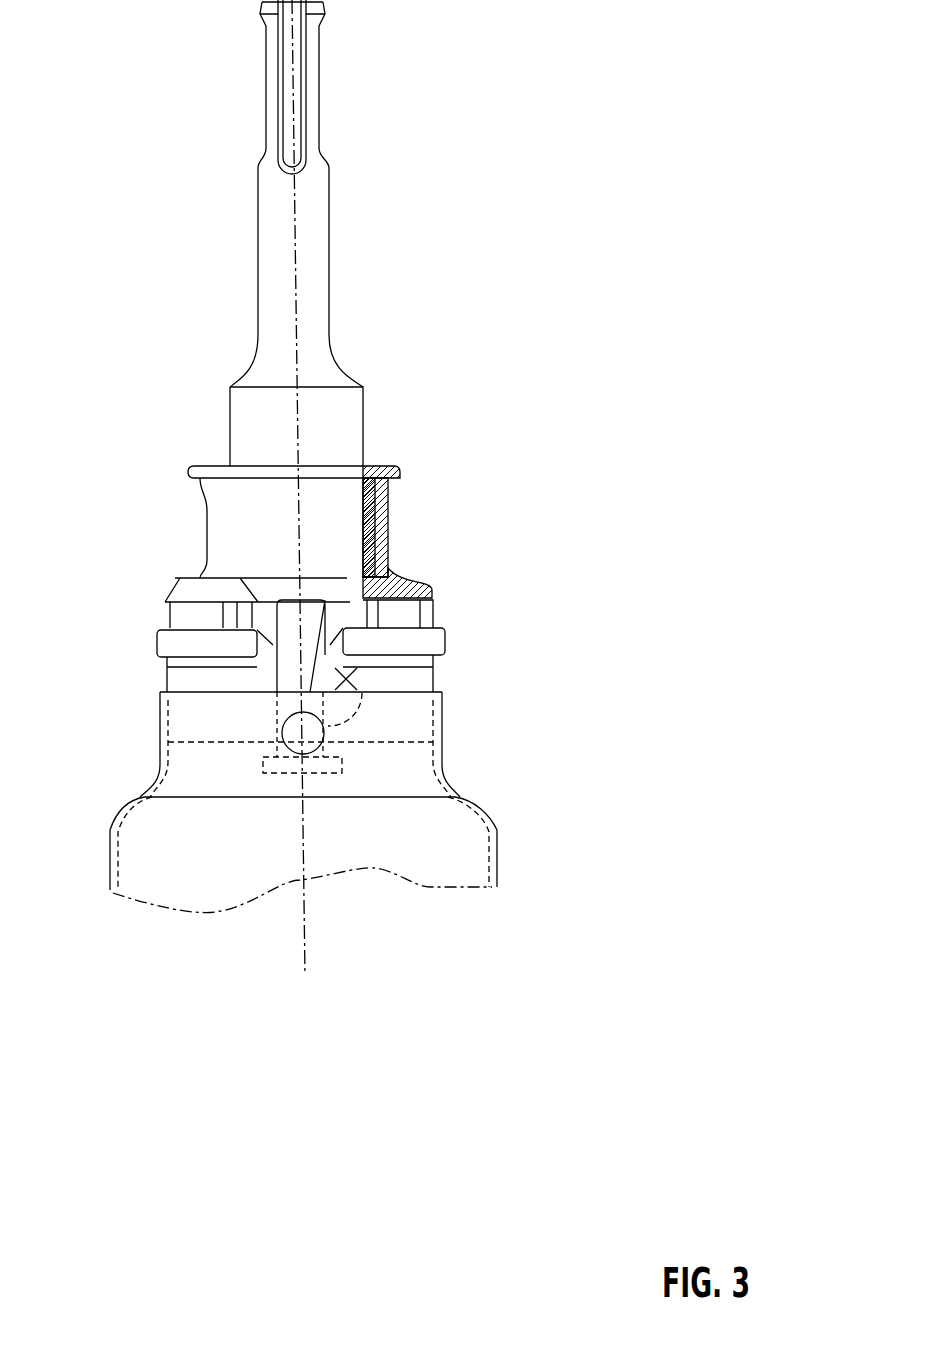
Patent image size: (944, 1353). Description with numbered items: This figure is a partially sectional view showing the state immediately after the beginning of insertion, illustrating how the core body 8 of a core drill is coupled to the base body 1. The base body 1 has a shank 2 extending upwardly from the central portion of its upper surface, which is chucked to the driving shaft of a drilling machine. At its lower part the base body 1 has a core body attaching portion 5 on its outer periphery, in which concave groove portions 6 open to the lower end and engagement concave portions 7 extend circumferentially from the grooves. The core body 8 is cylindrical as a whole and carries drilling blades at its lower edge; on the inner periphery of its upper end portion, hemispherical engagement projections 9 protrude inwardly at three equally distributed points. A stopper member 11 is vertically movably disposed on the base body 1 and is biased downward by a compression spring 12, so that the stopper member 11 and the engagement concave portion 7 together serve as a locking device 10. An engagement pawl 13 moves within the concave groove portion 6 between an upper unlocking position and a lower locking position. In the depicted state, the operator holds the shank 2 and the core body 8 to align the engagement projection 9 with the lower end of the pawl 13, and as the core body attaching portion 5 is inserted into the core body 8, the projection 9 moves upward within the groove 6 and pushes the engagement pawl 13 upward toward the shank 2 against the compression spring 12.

The base body 1 is at (330, 488).
The shank 2 is at (320, 285).
The core body attaching portion 5 is at (428, 680).
The concave groove portion 6 is at (165, 690).
The engagement concave portion 7 is at (362, 663).
The core body 8 is at (497, 857).
The engagement projection 9 is at (272, 727).
The locking device 10 is at (410, 463).
The stopper member 11 is at (430, 588).
The compression spring 12 is at (392, 530).
The engagement pawl 13 is at (283, 623).